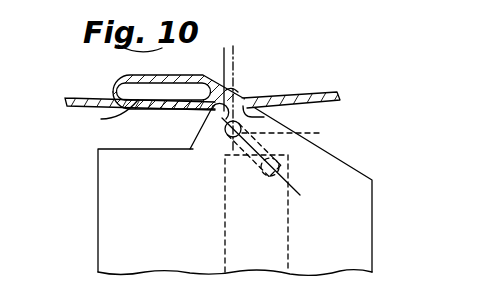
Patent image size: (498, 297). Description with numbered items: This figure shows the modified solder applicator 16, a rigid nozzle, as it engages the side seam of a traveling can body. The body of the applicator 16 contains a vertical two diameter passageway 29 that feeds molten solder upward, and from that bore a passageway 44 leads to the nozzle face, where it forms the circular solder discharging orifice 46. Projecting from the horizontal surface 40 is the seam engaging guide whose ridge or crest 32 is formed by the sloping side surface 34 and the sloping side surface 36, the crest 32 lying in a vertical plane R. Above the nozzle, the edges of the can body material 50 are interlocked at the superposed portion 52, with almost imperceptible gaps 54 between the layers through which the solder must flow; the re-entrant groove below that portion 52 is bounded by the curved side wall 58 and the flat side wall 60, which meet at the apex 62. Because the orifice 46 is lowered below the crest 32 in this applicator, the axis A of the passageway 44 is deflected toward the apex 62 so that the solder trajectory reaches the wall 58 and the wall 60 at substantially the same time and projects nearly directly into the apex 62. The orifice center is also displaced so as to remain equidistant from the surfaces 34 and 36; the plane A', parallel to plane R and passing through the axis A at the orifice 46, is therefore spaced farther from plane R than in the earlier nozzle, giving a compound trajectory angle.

The solder applicator 16 is at (373, 228).
The vertical two diameter passageway 29 is at (289, 215).
The ridge or crest 32 is at (237, 83).
The sloping side surface 34 is at (192, 146).
The sloping side surface 36 is at (352, 167).
The horizontal surface 40 is at (110, 147).
The passageway 44 is at (295, 133).
The solder discharging orifice 46 is at (226, 135).
The can body material 50 is at (65, 100).
The interlocked portion 52 is at (130, 76).
The gaps 54 is at (108, 115).
The curved side wall 58 is at (210, 123).
The flat side wall 60 is at (266, 112).
The apex 62 is at (205, 78).
The axis of the passageway A is at (261, 162).
The plane parallel to plane R A' is at (253, 93).
The vertical plane R is at (222, 66).